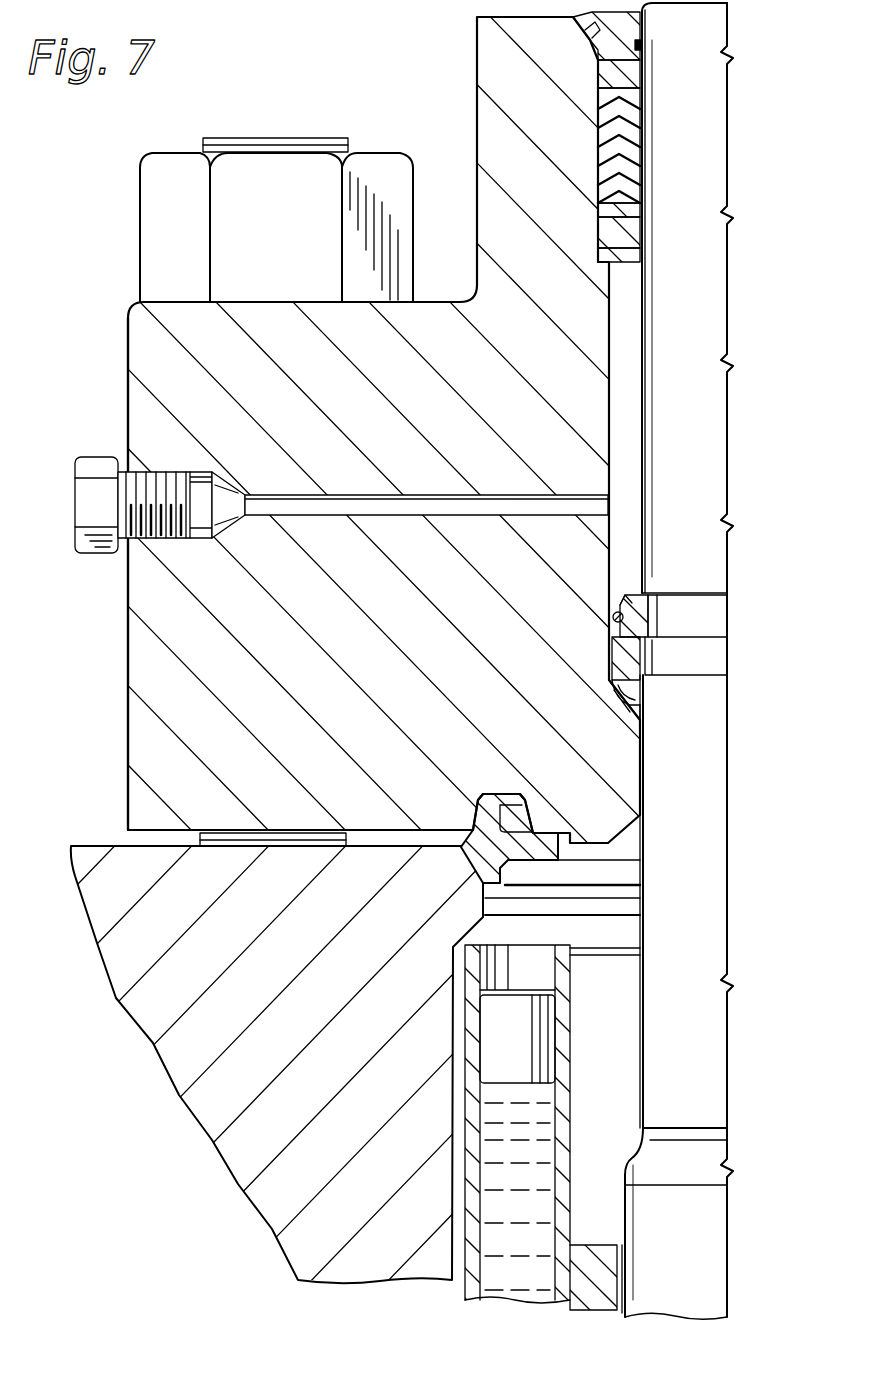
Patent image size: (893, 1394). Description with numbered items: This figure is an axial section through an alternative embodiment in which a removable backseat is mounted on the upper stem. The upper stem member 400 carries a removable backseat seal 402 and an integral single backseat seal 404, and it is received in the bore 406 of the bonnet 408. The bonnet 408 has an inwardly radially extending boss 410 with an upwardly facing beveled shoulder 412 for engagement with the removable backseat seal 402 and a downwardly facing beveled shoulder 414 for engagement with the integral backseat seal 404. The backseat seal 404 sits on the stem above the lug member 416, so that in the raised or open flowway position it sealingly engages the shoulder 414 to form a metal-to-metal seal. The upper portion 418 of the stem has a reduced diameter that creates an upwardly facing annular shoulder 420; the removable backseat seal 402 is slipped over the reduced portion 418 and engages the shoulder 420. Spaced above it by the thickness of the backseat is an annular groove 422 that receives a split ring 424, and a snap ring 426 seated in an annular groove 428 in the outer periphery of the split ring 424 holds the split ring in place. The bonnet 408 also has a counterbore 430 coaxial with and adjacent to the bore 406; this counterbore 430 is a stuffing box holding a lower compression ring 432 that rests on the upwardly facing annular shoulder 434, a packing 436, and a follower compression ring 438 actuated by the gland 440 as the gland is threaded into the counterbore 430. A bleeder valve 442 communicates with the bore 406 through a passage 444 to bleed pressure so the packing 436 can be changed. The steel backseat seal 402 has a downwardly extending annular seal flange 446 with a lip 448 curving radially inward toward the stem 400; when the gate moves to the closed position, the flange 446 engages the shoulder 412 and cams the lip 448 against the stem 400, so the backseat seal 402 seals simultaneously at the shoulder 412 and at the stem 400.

The upper stem member 400 is at (705, 780).
The removable backseat seal 402 is at (600, 651).
The integral single backseat seal 404 is at (695, 1160).
The bore 406 is at (612, 452).
The bonnet 408 is at (140, 392).
The inwardly radially extending boss 410 is at (632, 752).
The upwardly facing beveled shoulder 412 is at (643, 718).
The downwardly facing beveled shoulder 414 is at (643, 833).
The lug member 416 is at (680, 1255).
The upper portion 418 is at (712, 322).
The upwardly facing annular shoulder 420 is at (705, 677).
The annular groove 422 is at (708, 610).
The split ring 424 is at (615, 628).
The snap ring 426 is at (613, 618).
The annular groove 428 is at (617, 608).
The counterbore 430 is at (643, 220).
The lower compression ring 432 is at (643, 233).
The upwardly facing annular shoulder 434 is at (643, 247).
The packing 436 is at (643, 157).
The follower compression ring 438 is at (643, 72).
The gland 440 is at (643, 27).
The bleeder valve 442 is at (97, 462).
The passage 444 is at (598, 505).
The annular seal flange 446 is at (612, 680).
The lip 448 is at (645, 710).